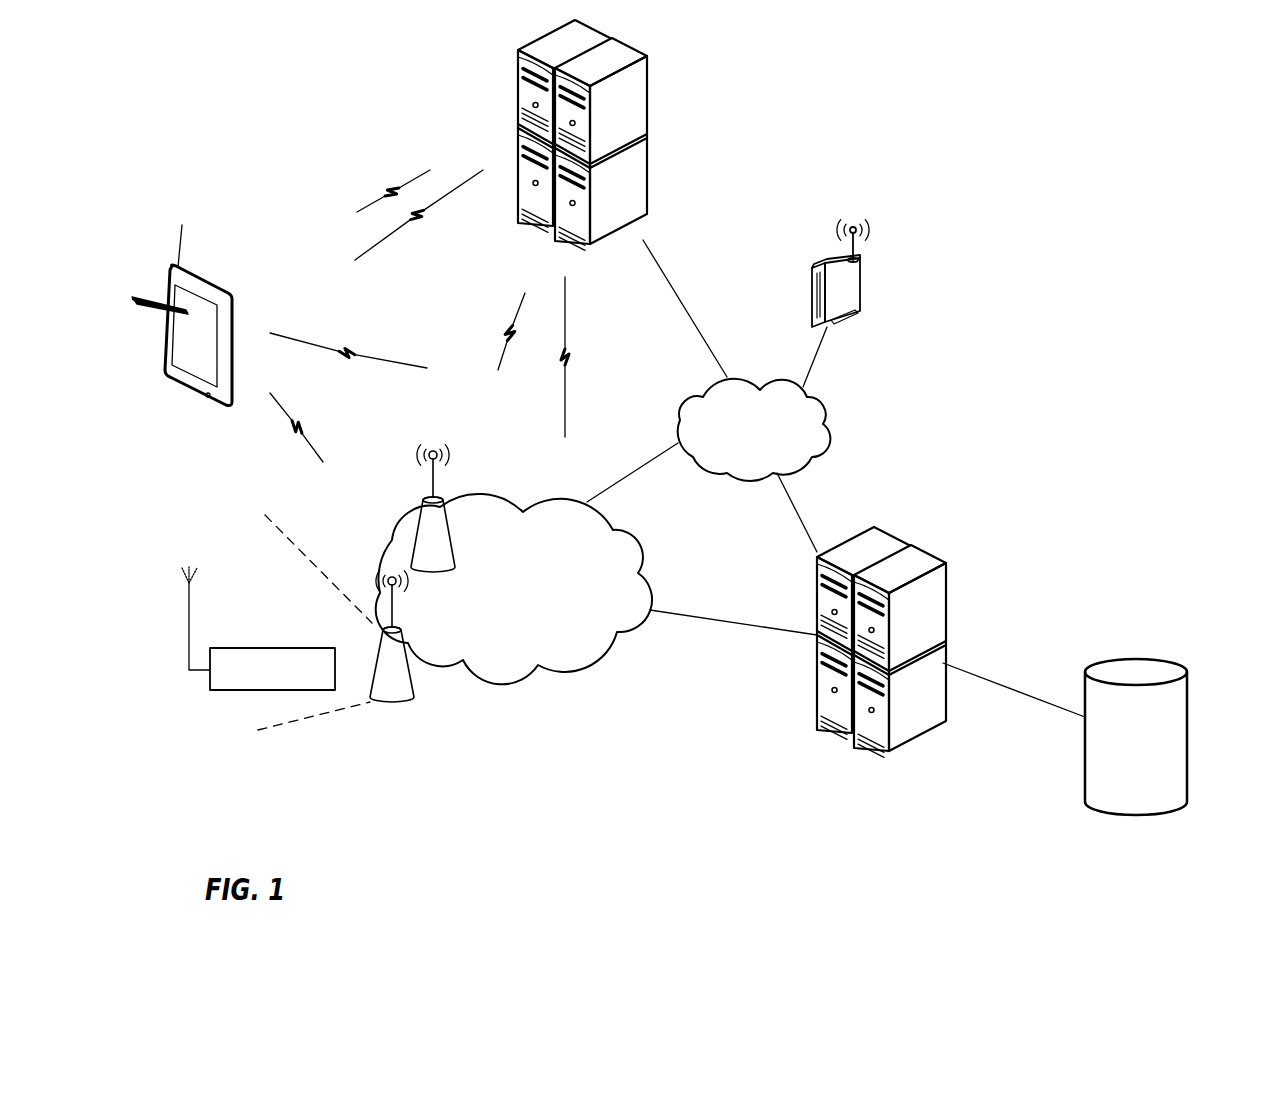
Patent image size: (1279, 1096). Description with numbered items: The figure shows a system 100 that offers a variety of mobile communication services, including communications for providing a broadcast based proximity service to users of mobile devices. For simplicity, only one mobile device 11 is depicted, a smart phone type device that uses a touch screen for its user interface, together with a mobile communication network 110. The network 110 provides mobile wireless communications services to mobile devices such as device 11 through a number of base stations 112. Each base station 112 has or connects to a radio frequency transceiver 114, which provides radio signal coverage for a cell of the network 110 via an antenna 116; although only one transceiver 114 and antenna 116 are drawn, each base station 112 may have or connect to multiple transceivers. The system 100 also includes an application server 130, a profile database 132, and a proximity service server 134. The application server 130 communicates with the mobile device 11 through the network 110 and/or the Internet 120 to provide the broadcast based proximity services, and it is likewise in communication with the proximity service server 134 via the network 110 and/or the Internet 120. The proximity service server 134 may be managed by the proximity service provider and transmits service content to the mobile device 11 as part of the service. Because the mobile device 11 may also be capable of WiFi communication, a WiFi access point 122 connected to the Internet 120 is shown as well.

The system 100 is at (337, 163).
The mobile device 11 is at (233, 310).
The mobile communication network 110 is at (613, 652).
The base station 112 is at (422, 523).
The radio frequency transceiver 114 is at (263, 647).
The antenna 116 is at (195, 568).
The Internet 120 is at (825, 412).
The WiFi access point 122 is at (817, 292).
The application server 130 is at (943, 573).
The profile database 132 is at (1187, 683).
The proximity service server 134 is at (650, 77).